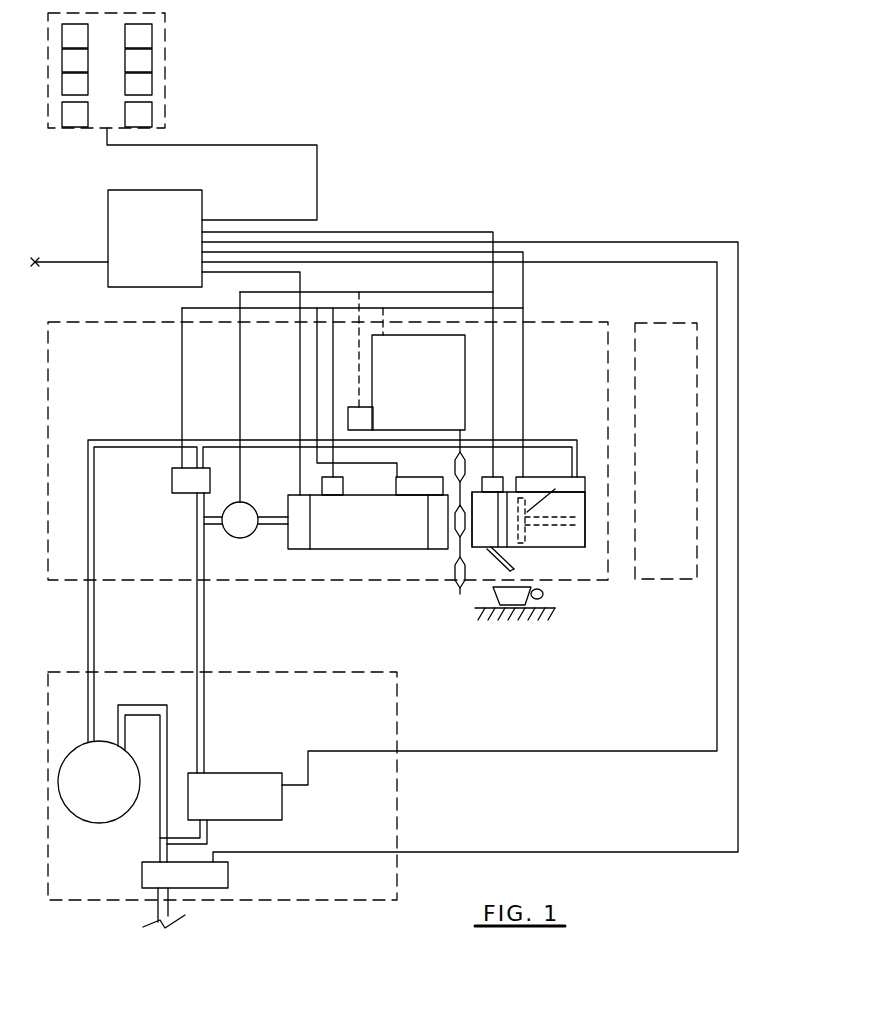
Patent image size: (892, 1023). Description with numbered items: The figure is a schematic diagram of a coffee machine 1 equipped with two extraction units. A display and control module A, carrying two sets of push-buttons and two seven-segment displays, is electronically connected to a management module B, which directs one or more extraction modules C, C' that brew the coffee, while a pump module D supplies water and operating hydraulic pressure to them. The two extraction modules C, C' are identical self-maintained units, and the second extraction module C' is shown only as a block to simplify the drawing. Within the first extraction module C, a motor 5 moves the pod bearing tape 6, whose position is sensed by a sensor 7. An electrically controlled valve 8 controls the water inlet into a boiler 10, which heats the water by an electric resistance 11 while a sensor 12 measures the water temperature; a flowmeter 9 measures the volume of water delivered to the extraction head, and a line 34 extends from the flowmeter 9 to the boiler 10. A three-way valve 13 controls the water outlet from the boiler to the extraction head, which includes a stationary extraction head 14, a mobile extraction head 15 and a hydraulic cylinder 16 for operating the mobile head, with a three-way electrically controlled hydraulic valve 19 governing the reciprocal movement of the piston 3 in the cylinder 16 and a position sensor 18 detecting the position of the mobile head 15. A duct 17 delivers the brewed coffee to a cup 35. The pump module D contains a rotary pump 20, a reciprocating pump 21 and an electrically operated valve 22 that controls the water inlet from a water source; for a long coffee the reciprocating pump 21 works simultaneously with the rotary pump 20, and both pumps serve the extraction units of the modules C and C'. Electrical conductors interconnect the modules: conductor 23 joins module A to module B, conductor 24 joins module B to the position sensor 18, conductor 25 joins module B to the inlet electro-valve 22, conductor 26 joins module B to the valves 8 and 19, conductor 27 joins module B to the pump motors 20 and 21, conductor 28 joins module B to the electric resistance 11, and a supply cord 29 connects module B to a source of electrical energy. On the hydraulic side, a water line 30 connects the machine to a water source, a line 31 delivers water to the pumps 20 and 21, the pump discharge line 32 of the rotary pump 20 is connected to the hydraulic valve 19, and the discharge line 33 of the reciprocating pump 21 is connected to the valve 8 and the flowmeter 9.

The machine 1 is at (437, 197).
The display and control module A is at (152, 28).
The management module B is at (130, 230).
The extraction module C is at (328, 426).
The extraction module C' is at (666, 478).
The pump module D is at (362, 716).
The piston 3 is at (575, 477).
The motor 5 is at (452, 362).
The pod bearing tape 6 is at (460, 592).
The sensor 7 is at (360, 423).
The electrically controlled valve 8 is at (190, 482).
The flowmeter 9 is at (243, 515).
The boiler 10 is at (391, 538).
The electric resistance 11 is at (302, 538).
The sensor 12 is at (338, 490).
The three-way valve 13 is at (420, 485).
The stationary extraction head 14 is at (441, 528).
The mobile extraction head 15 is at (481, 537).
The hydraulic cylinder 16 is at (568, 533).
The duct 17 is at (512, 565).
The position sensor 18 is at (500, 485).
The three-way electrically controlled hydraulic valve 19 is at (538, 483).
The rotary pump 20 is at (90, 803).
The reciprocating pump 21 is at (257, 808).
The electrically operated valve 22 is at (211, 874).
The conductor 23 is at (240, 145).
The conductor 24 is at (350, 232).
The conductor 25 is at (553, 241).
The conductor 26 is at (525, 273).
The conductor 27 is at (570, 262).
The conductor 28 is at (300, 283).
The supply cord 29 is at (85, 260).
The water line 30 is at (163, 897).
The line 31 is at (174, 837).
The pump discharge line 32 is at (92, 627).
The discharge line 33 is at (200, 615).
The line 34 is at (278, 519).
The cup 35 is at (545, 610).